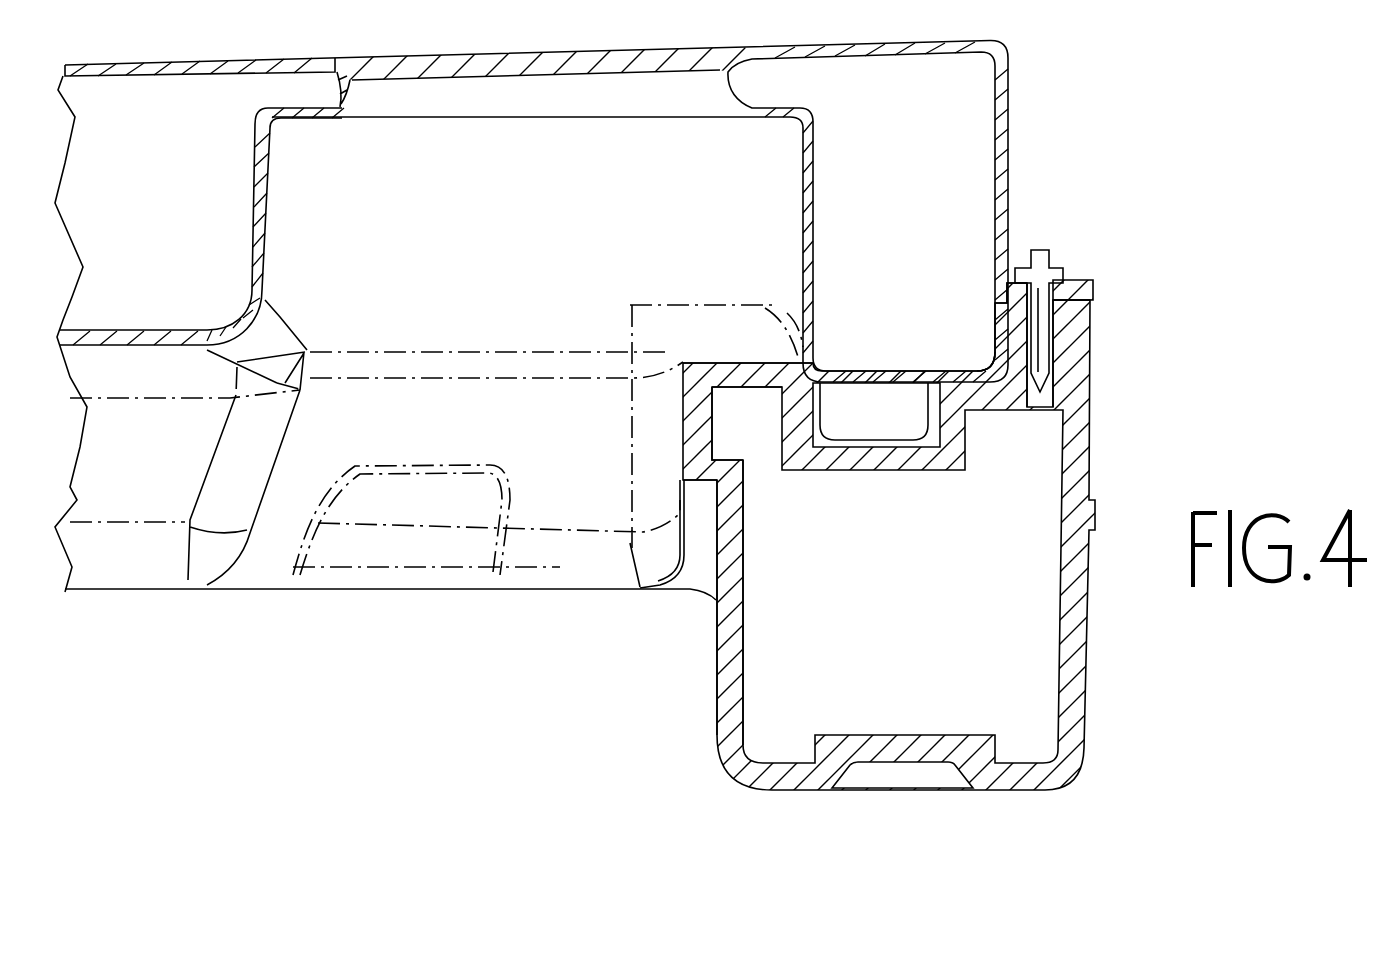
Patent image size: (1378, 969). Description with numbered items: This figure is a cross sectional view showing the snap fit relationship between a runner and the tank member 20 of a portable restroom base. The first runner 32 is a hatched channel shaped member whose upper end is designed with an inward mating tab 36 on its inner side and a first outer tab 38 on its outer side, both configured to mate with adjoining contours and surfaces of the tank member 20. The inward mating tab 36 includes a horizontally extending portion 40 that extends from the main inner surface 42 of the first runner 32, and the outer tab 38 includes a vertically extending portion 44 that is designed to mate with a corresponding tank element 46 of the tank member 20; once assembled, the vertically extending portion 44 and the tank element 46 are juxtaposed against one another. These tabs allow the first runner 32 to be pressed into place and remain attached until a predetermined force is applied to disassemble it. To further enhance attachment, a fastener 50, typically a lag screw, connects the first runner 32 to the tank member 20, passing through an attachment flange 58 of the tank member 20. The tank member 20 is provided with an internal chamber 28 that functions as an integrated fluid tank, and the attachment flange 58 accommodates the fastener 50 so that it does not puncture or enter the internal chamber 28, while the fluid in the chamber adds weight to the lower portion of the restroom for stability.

The tank member 20 is at (443, 153).
The internal chamber 28 is at (178, 191).
The first runner 32 is at (1099, 687).
The inward mating tab 36 is at (733, 408).
The first outer tab 38 is at (1050, 360).
The horizontally extending portion 40 is at (747, 370).
The main inner surface 42 is at (723, 643).
The vertically extending portion 44 is at (1018, 323).
The tank element 46 is at (995, 355).
The fastener 50 is at (1045, 257).
The attachment flange 58 is at (1080, 290).